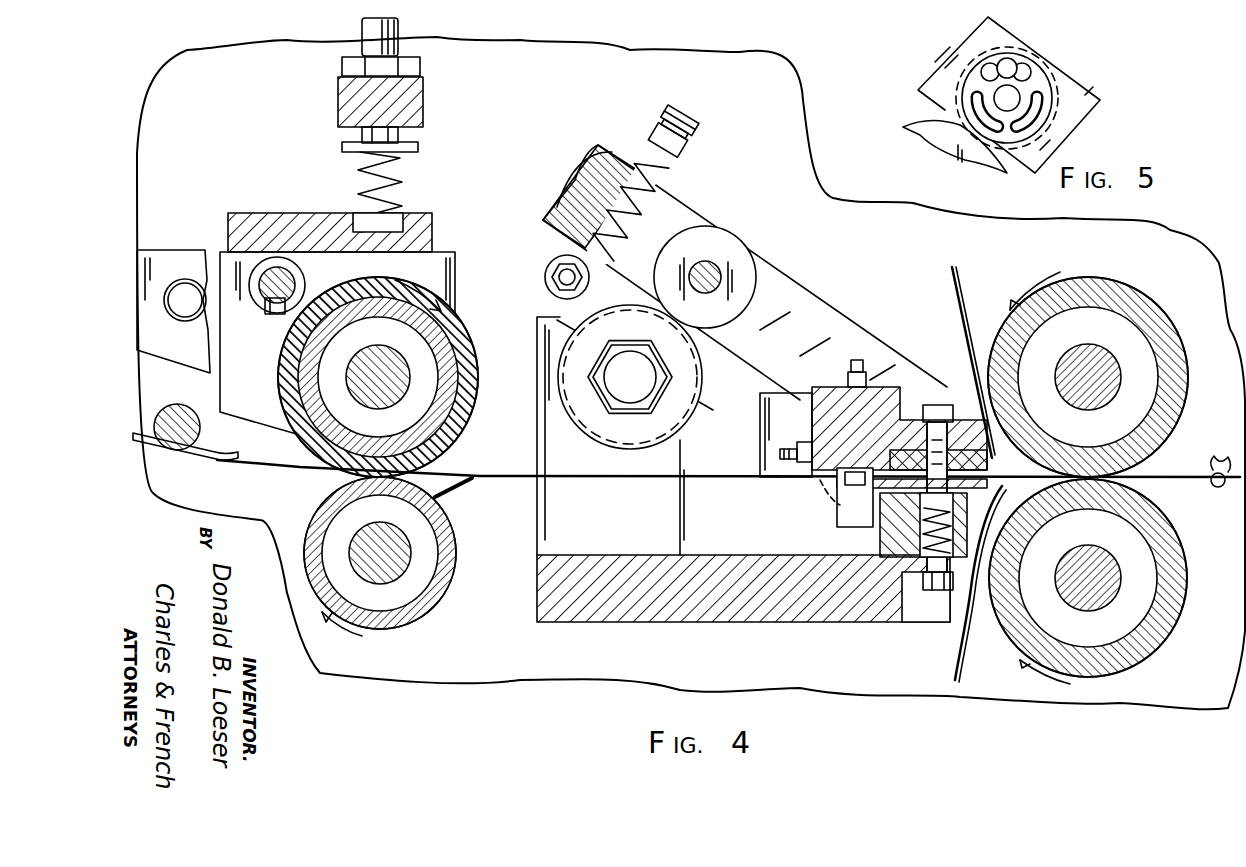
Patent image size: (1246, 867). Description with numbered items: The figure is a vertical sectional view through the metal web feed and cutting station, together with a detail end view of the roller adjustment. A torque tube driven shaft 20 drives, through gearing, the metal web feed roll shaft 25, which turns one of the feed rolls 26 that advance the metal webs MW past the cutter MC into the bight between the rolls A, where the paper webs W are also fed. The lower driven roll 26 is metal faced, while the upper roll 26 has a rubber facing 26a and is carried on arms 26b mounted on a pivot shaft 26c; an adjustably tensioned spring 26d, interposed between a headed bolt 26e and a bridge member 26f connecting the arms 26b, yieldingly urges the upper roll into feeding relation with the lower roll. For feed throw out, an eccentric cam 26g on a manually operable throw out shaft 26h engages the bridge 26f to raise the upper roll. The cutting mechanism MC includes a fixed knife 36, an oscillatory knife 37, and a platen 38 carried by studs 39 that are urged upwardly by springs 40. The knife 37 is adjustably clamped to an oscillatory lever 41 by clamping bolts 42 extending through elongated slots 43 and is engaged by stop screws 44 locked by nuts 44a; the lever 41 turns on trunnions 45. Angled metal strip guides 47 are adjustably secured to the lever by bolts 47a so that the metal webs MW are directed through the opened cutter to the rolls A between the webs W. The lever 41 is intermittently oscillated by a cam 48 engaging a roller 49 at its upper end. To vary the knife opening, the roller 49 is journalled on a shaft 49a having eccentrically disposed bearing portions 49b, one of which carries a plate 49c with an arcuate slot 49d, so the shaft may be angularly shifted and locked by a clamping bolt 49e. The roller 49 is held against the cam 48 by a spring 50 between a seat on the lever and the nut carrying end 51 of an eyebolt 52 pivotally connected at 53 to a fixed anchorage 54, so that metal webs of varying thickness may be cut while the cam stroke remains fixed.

In FIG. 4, the torque tube driven shaft 20 is at (640, 397).
In FIG. 4, the metal web feed roll shaft 25 is at (392, 565).
In FIG. 4, the feed rolls 26 is at (414, 430).
In FIG. 4, the rubber facing 26a is at (478, 384).
In FIG. 4, the arms 26b is at (230, 394).
In FIG. 4, the pivot shaft 26c is at (185, 292).
In FIG. 4, the adjustably tensioned spring 26d is at (403, 186).
In FIG. 4, the headed bolt 26e is at (400, 26).
In FIG. 4, the bridge member 26f is at (285, 213).
In FIG. 4, the eccentric cam 26g is at (305, 282).
In FIG. 4, the throw out shaft 26h is at (262, 316).
In FIG. 4, the fixed knife 36 is at (1000, 478).
In FIG. 4, the oscillatory knife 37 is at (992, 464).
In FIG. 4, the platen 38 is at (888, 490).
In FIG. 4, the studs 39 is at (915, 540).
In FIG. 4, the springs 40 is at (936, 590).
In FIG. 4, the oscillatory lever 41 is at (880, 345).
In FIG. 5, the oscillatory lever 41 is at (1098, 100).
In FIG. 4, the clamping bolts 42 is at (940, 405).
In FIG. 4, the elongated slots 43 is at (928, 410).
In FIG. 4, the stop screws 44 is at (795, 462).
In FIG. 4, the nuts 44a is at (805, 440).
In FIG. 4, the trunnions 45 is at (836, 493).
In FIG. 4, the angled metal strip guides 47 is at (835, 522).
In FIG. 4, the bolts 47a is at (850, 362).
In FIG. 4, the cam 48 is at (700, 392).
In FIG. 5, the cam 48 is at (945, 145).
In FIG. 4, the roller 49 is at (735, 240).
In FIG. 5, the roller 49 is at (988, 35).
In FIG. 4, the shaft 49a is at (720, 285).
In FIG. 5, the shaft 49a is at (1058, 80).
In FIG. 4, the eccentrically disposed bearing portions 49b is at (702, 262).
In FIG. 5, the plate 49c is at (975, 58).
In FIG. 5, the arcuate slot 49d is at (1024, 68).
In FIG. 5, the clamping bolt 49e is at (1010, 60).
In FIG. 4, the spring 50 is at (598, 170).
In FIG. 4, the nut carrying end 51 is at (678, 155).
In FIG. 4, the eyebolt 52 is at (628, 208).
In FIG. 4, the pivotal connection 53 is at (545, 276).
In FIG. 4, the fixed anchorage 54 is at (555, 304).
In FIG. 4, the metal webs MW is at (278, 468).
In FIG. 4, the metal web cutting mechanism MC is at (868, 304).
In FIG. 4, the webs W is at (958, 275).
In FIG. 4, the rolls A is at (1150, 305).